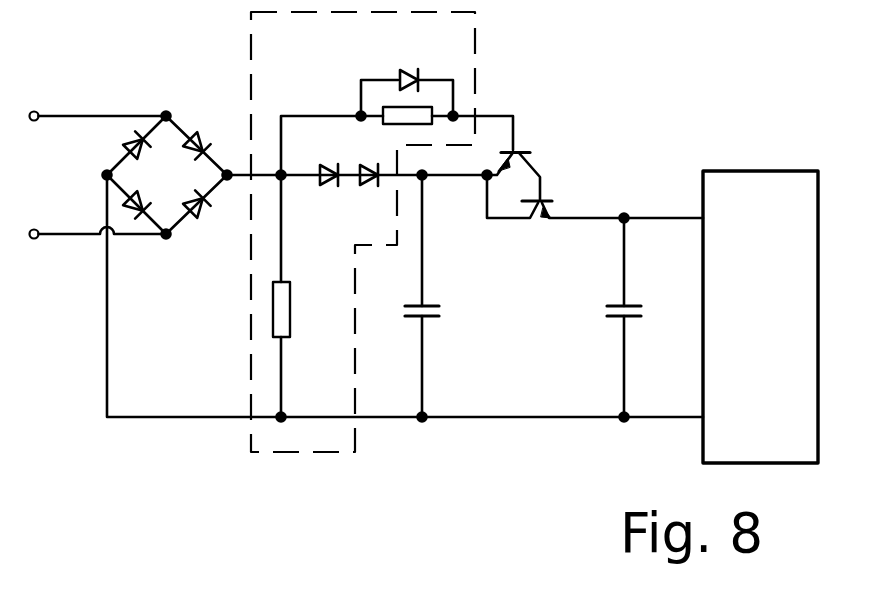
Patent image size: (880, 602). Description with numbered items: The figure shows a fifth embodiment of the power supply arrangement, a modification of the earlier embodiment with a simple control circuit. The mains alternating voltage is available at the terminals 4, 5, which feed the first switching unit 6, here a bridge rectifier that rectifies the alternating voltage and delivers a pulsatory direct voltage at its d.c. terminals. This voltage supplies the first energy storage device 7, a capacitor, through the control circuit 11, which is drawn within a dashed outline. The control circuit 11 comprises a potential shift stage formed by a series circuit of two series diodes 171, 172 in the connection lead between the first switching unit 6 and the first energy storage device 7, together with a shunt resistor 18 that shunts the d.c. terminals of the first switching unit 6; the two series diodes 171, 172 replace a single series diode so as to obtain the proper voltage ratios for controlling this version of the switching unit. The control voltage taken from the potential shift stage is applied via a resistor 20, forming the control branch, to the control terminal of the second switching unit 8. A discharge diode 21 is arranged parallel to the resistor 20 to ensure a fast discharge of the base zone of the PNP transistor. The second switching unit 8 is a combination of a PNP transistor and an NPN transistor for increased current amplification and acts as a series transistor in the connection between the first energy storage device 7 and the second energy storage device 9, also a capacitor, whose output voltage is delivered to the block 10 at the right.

The terminal 4 is at (33, 112).
The terminal 5 is at (33, 230).
The first switching unit 6 is at (173, 187).
The control circuit 11 is at (307, 72).
The discharge diode 21 is at (411, 69).
The resistor 20 is at (394, 124).
The series diode 171 is at (329, 165).
The series diode 172 is at (378, 186).
The shunt resistor 18 is at (291, 309).
The first energy storage device 7 is at (431, 296).
The second switching unit 8 is at (595, 186).
The second energy storage device 9 is at (610, 316).
The load circuit 10 is at (763, 170).